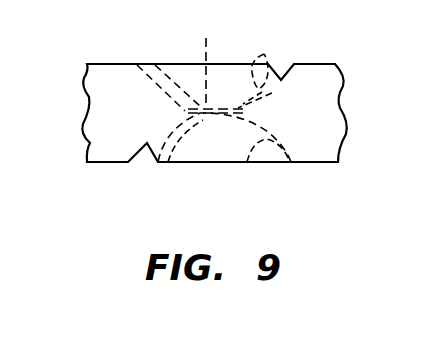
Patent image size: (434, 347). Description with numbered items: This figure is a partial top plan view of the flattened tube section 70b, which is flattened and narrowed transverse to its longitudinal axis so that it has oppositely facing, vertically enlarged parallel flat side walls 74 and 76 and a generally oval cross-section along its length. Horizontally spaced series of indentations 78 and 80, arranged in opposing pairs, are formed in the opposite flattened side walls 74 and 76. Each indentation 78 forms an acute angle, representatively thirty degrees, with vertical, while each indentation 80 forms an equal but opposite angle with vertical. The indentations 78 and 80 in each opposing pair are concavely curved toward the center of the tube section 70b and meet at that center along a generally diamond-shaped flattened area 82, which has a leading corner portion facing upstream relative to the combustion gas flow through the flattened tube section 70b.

The tube section 70b is at (112, 79).
The flat side wall 74 is at (313, 164).
The flat side wall 76 is at (313, 63).
The indentations 78 is at (242, 170).
The indentations 80 is at (264, 54).
The diamond-shaped flattened area 82 is at (207, 38).